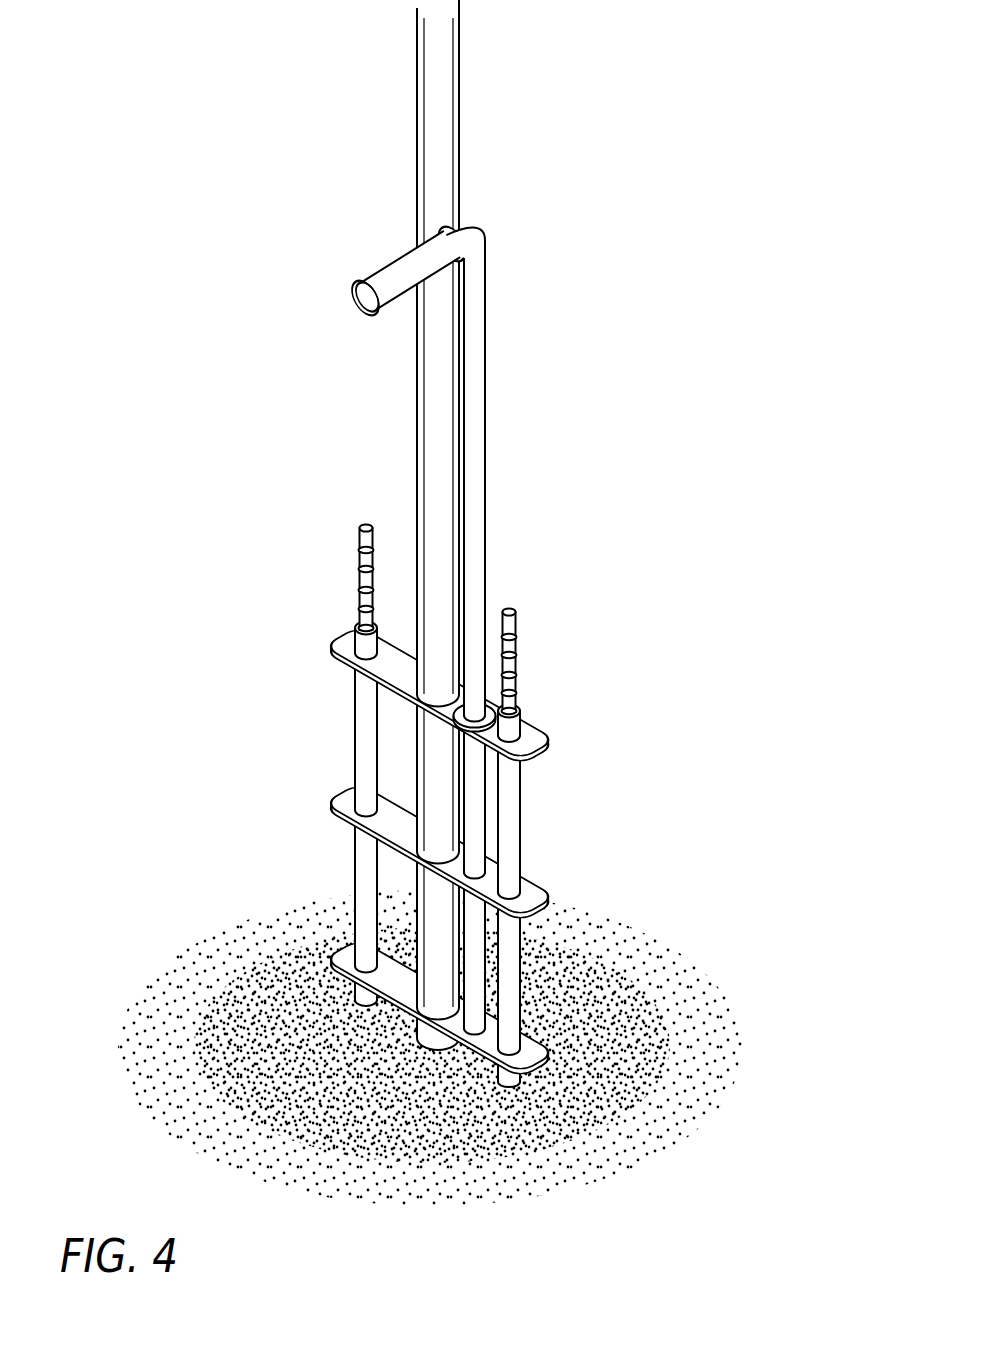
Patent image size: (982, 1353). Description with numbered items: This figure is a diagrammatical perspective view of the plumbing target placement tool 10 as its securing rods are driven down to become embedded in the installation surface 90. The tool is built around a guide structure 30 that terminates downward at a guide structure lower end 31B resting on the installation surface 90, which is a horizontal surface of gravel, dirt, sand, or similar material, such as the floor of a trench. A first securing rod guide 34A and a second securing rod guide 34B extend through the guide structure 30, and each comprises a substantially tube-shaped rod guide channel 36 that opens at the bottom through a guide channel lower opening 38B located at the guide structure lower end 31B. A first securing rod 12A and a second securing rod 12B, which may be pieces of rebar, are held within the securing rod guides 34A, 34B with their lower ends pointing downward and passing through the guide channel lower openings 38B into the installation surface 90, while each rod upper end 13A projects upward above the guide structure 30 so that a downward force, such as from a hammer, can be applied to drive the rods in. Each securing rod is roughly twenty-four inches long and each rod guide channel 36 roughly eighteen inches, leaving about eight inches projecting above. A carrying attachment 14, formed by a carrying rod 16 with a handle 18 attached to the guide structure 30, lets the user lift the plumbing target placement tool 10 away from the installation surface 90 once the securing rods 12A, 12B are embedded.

The plumbing target placement tool 10 is at (506, 852).
The first securing rod 12A is at (326, 579).
The second securing rod 12B is at (545, 663).
The rod upper end 13A is at (428, 548).
The carrying attachment 14 is at (501, 353).
The carrying rod 16 is at (495, 479).
The handle 18 is at (408, 268).
The guide structure 30 is at (393, 695).
The guide structure lower end 31B is at (502, 1065).
The first securing rod guide 34A is at (321, 628).
The second securing rod guide 34B is at (555, 738).
The rod guide channel 36 is at (434, 778).
The guide channel lower opening 38B is at (396, 1103).
The installation surface 90 is at (430, 1048).